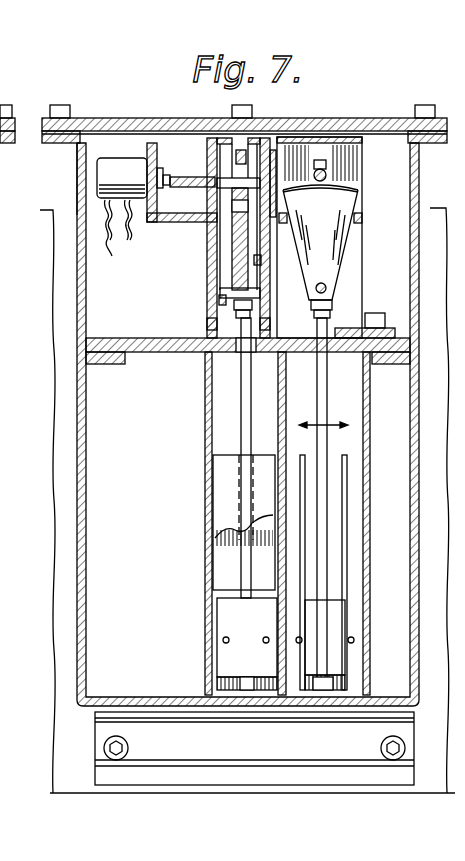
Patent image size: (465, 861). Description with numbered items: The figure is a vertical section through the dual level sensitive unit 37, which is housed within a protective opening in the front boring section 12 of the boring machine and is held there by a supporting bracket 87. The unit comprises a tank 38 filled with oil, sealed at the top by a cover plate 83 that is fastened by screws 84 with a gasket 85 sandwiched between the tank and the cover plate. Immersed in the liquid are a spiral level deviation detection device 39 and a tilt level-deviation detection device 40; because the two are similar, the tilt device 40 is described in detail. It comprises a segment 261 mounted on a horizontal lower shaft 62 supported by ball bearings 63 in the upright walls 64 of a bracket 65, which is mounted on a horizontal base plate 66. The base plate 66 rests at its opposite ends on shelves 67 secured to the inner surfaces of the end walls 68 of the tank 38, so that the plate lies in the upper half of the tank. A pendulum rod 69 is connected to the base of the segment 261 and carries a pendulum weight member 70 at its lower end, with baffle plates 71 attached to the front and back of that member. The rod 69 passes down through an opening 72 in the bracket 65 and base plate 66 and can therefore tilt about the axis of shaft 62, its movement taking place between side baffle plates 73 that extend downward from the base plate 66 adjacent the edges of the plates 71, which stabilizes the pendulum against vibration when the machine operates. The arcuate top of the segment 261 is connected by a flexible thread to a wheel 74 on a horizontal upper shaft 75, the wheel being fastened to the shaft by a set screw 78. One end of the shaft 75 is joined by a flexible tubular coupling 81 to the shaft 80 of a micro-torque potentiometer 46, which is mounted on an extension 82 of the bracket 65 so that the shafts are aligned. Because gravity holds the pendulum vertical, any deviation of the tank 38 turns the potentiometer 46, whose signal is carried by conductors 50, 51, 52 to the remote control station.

The front boring section 12 is at (63, 295).
The dual level sensitive unit 37 is at (74, 462).
The tank 38 is at (80, 570).
The spiral level deviation detection device 39 is at (368, 152).
The tilt level-deviation detection device 40 is at (200, 252).
The potentiometer 46 is at (128, 168).
The conductor 50 is at (77, 211).
The conductor 51 is at (112, 242).
The conductor 52 is at (130, 224).
The horizontal lower shaft 62 is at (210, 322).
The ball bearings 63 is at (214, 297).
The upright walls 64 is at (213, 268).
The bracket 65 is at (205, 263).
The horizontal base plate 66 is at (173, 352).
The shelves 67 is at (112, 364).
The end walls 68 is at (87, 495).
The pendulum rod 69 is at (241, 432).
The pendulum weight member 70 is at (235, 628).
The baffle plates 71 is at (230, 510).
The opening 72 is at (252, 357).
The side baffle plates 73 is at (287, 423).
The wheel 74 is at (244, 167).
The horizontal upper shaft 75 is at (225, 140).
The set screw 78 is at (265, 165).
The potentiometer shaft 80 is at (170, 176).
The flexible tubular coupling 81 is at (186, 187).
The extension 82 is at (150, 143).
The cover plate 83 is at (372, 118).
The screws 84 is at (60, 105).
The gasket 85 is at (62, 131).
The bracket 87 is at (100, 735).
The segment 261 is at (248, 252).